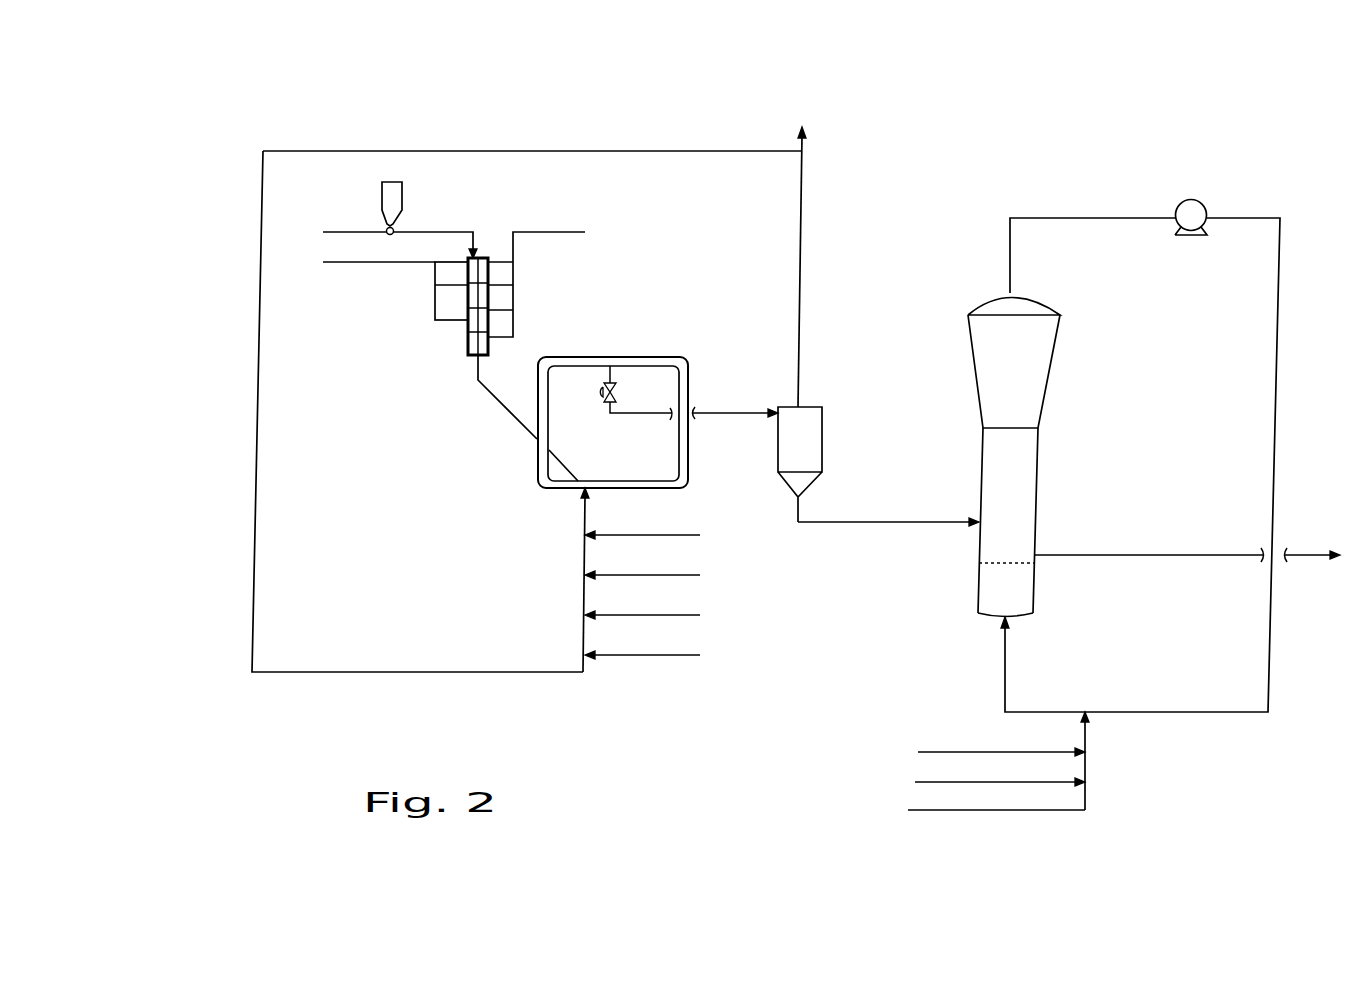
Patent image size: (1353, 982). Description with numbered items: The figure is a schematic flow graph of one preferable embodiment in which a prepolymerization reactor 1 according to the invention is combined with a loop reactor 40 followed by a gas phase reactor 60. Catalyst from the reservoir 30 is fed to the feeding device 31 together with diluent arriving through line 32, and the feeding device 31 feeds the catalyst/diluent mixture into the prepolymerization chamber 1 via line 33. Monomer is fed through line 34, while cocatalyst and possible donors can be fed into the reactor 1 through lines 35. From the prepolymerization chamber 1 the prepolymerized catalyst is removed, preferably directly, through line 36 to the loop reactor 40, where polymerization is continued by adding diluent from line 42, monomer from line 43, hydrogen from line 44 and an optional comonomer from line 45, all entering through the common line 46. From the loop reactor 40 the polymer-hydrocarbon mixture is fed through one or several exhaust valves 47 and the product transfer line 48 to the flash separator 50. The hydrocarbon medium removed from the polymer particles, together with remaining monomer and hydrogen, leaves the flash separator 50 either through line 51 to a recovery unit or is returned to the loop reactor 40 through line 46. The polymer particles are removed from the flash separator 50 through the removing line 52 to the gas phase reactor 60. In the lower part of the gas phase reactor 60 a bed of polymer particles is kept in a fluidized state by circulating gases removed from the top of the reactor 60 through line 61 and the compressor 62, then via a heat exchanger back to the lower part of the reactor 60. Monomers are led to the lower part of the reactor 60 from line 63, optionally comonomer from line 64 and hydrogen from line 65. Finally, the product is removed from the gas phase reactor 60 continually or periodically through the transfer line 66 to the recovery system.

The prepolymerization reactor 1 is at (450, 350).
The reservoir 30 is at (384, 180).
The feeding device 31 is at (385, 228).
The line 32 is at (343, 230).
The line 33 is at (430, 230).
The line 34 is at (368, 263).
The lines 35 is at (555, 228).
The line 36 is at (512, 422).
The loop reactor 40 is at (580, 355).
The line 42 is at (622, 535).
The line 43 is at (630, 573).
The line 44 is at (623, 615).
The line 45 is at (628, 653).
The line 46 is at (578, 515).
The exhaust valve 47 is at (613, 390).
The product transfer line 48 is at (725, 410).
The flash separator 50 is at (822, 437).
The line 51 is at (807, 145).
The removing line 52 is at (865, 518).
The gas phase reactor 60 is at (1048, 392).
The line 61 is at (1038, 218).
The compressor 62 is at (1210, 205).
The line 63 is at (1013, 750).
The line 64 is at (957, 782).
The line 65 is at (972, 810).
The transfer line 66 is at (1092, 552).